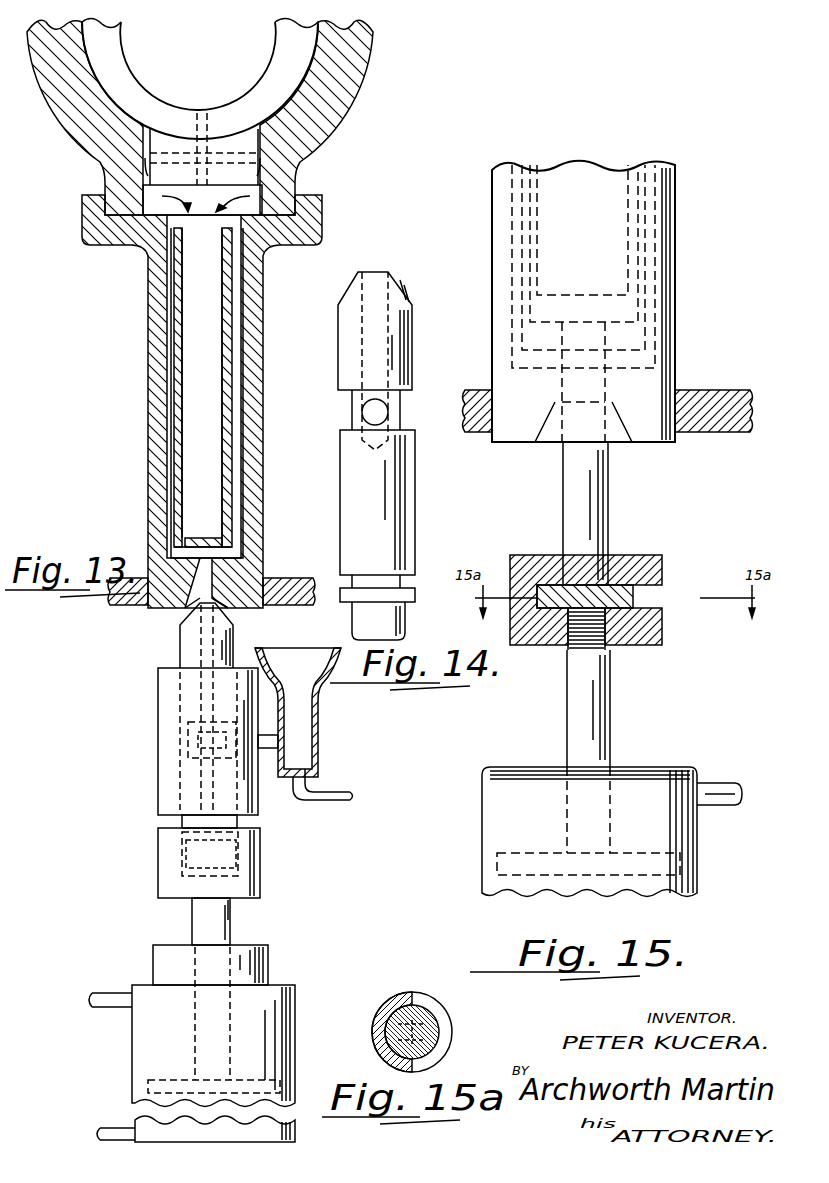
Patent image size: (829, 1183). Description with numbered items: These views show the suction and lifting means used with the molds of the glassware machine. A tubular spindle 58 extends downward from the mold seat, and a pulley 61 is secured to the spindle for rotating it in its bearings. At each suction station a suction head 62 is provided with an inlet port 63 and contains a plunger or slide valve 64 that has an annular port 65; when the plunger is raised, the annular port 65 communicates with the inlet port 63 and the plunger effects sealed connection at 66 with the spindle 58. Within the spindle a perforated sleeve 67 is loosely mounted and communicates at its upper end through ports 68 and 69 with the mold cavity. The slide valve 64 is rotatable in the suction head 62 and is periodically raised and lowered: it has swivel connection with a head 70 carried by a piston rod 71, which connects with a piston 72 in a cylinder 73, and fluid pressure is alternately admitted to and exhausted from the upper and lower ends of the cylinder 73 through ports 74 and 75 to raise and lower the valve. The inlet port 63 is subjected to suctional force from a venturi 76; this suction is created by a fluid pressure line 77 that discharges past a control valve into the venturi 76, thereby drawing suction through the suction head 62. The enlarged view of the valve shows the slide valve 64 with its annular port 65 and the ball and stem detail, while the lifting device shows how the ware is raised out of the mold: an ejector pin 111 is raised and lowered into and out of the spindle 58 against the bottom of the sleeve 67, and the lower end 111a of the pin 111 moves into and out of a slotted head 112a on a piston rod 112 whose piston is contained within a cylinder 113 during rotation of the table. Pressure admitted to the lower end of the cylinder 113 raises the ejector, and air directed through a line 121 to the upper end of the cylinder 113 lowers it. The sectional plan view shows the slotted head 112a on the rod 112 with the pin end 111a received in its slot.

In FIG. 13, the tubular spindle 58 is at (150, 330).
In FIG. 15, the tubular spindle 58 is at (676, 212).
In FIG. 13, the pulley 61 is at (290, 585).
In FIG. 15, the pulley 61 is at (718, 400).
In FIG. 13, the suction head 62 is at (158, 692).
In FIG. 13, the inlet port 63 is at (265, 748).
In FIG. 14, the inlet port 63 is at (362, 408).
In FIG. 13, the plunger or slide valve 64 is at (238, 655).
In FIG. 14, the plunger or slide valve 64 is at (413, 335).
In FIG. 13, the annular port 65 is at (185, 730).
In FIG. 14, the annular port 65 is at (405, 415).
In FIG. 13, the sealed connection 66 is at (190, 612).
In FIG. 13, the perforated sleeve 67 is at (218, 440).
In FIG. 15, the perforated sleeve 67 is at (625, 268).
In FIG. 13, the port 68 is at (217, 168).
In FIG. 13, the port 69 is at (193, 175).
In FIG. 13, the head 70 is at (262, 860).
In FIG. 13, the piston rod 71 is at (232, 924).
In FIG. 13, the piston 72 is at (162, 1083).
In FIG. 13, the cylinder 73 is at (285, 1010).
In FIG. 13, the port 74 is at (105, 998).
In FIG. 13, the port 75 is at (112, 1130).
In FIG. 13, the venturi 76 is at (320, 700).
In FIG. 13, the fluid pressure line 77 is at (335, 802).
In FIG. 15, the ejector pin 111 is at (608, 508).
In FIG. 15, the lower end of ejector pin 111a is at (640, 597).
In FIG. 15A, the lower end of ejector pin 111a is at (425, 1017).
In FIG. 15, the piston rod 112 is at (610, 722).
In FIG. 15A, the piston rod 112 is at (440, 1044).
In FIG. 15, the slotted head 112a is at (662, 622).
In FIG. 15A, the slotted head 112a is at (445, 1024).
In FIG. 15, the cylinder 113 is at (658, 767).
In FIG. 15, the line 121 is at (710, 786).